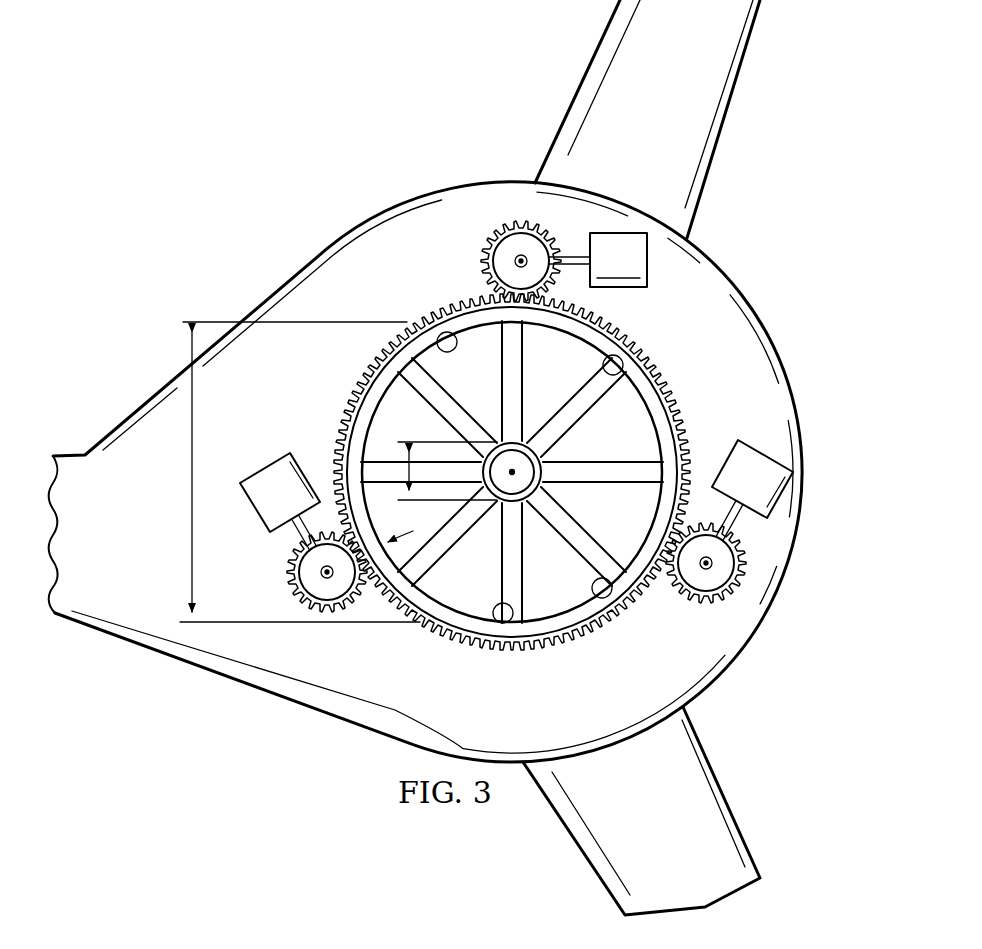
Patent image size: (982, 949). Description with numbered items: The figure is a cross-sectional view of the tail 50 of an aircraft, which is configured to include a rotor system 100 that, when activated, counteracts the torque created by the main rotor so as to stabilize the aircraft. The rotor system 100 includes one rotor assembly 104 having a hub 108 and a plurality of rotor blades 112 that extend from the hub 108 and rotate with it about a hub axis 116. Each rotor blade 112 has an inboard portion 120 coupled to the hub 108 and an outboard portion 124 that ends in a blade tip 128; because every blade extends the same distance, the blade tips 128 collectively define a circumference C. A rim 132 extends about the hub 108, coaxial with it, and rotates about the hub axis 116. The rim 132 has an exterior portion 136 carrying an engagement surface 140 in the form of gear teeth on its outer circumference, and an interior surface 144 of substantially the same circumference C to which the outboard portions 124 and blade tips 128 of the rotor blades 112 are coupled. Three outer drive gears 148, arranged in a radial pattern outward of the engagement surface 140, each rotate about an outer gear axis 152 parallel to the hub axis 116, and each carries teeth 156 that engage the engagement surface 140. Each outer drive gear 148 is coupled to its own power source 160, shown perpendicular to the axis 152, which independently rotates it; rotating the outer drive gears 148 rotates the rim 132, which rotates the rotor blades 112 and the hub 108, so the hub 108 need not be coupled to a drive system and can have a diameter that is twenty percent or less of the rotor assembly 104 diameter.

The tail 50 is at (297, 95).
The rotor system 100 is at (745, 240).
The rotor assembly 104 is at (348, 393).
The hub 108 is at (522, 444).
The rotor blades 112 is at (502, 383).
The hub axis 116 is at (514, 501).
The inboard portion 120 is at (568, 448).
The outboard portion 124 is at (625, 388).
The blade tip 128 is at (604, 362).
The rim 132 is at (612, 311).
The exterior portion 136 is at (378, 358).
The engagement surface 140 is at (666, 372).
The interior surface 144 is at (440, 335).
The outer drive gears 148 is at (514, 240).
The outer gear axis 152 is at (515, 262).
The teeth 156 is at (543, 228).
The power source 160 is at (647, 272).